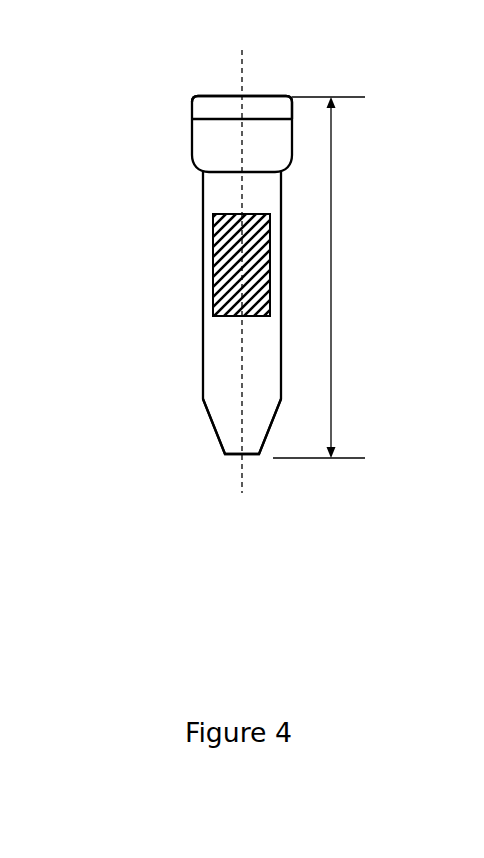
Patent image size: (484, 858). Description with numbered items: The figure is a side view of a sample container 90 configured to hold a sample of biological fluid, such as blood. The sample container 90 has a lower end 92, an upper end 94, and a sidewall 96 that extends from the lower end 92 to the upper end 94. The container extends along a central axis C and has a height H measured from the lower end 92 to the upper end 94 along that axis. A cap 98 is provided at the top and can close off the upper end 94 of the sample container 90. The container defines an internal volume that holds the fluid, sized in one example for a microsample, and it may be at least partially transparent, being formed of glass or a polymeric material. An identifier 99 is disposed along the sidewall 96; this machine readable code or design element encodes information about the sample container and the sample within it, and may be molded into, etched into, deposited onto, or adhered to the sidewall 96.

The sample container 90 is at (147, 80).
The lower end 92 is at (185, 470).
The upper end 94 is at (167, 132).
The sidewall 96 is at (213, 350).
The cap 98 is at (263, 108).
The identifier 99 is at (212, 278).